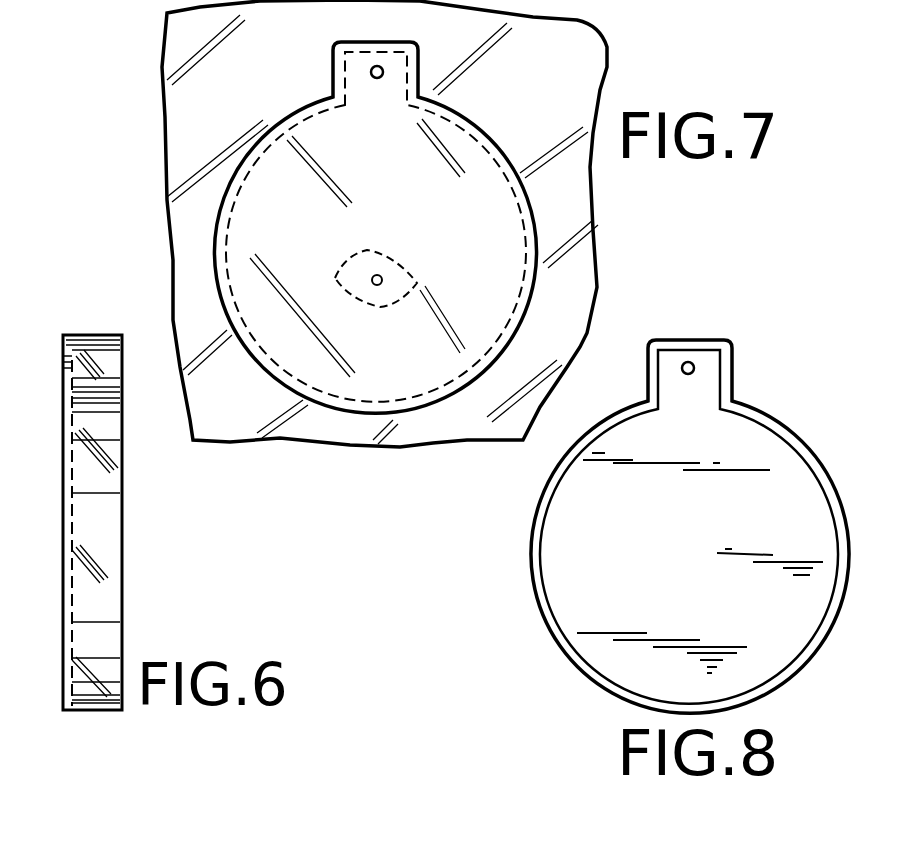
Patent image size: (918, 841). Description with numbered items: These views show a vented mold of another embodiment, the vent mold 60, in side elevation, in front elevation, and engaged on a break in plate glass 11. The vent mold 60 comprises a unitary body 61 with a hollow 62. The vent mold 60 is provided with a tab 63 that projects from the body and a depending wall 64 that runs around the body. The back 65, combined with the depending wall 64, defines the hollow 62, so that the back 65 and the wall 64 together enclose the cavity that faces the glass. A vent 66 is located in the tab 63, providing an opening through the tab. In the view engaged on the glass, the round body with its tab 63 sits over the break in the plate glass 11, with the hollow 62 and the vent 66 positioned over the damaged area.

In FIG. 7, the backing panel 11 is at (173, 117).
In FIG. 7, the vent mold 60 is at (496, 136).
In FIG. 6, the vent mold 60 is at (58, 680).
In FIG. 8, the vent mold 60 is at (806, 431).
In FIG. 7, the unitary body 61 is at (283, 347).
In FIG. 6, the unitary body 61 is at (60, 627).
In FIG. 8, the unitary body 61 is at (843, 612).
In FIG. 6, the hollow 62 is at (98, 586).
In FIG. 8, the hollow 62 is at (684, 605).
In FIG. 7, the tab 63 is at (333, 63).
In FIG. 6, the tab 63 is at (103, 357).
In FIG. 8, the tab 63 is at (732, 375).
In FIG. 6, the depending wall 64 is at (110, 480).
In FIG. 8, the depending wall 64 is at (536, 506).
In FIG. 7, the back 65 is at (459, 211).
In FIG. 6, the back 65 is at (62, 460).
In FIG. 8, the back 65 is at (562, 567).
In FIG. 7, the vent 66 is at (374, 80).
In FIG. 6, the vent 66 is at (68, 365).
In FIG. 8, the vent 66 is at (689, 362).